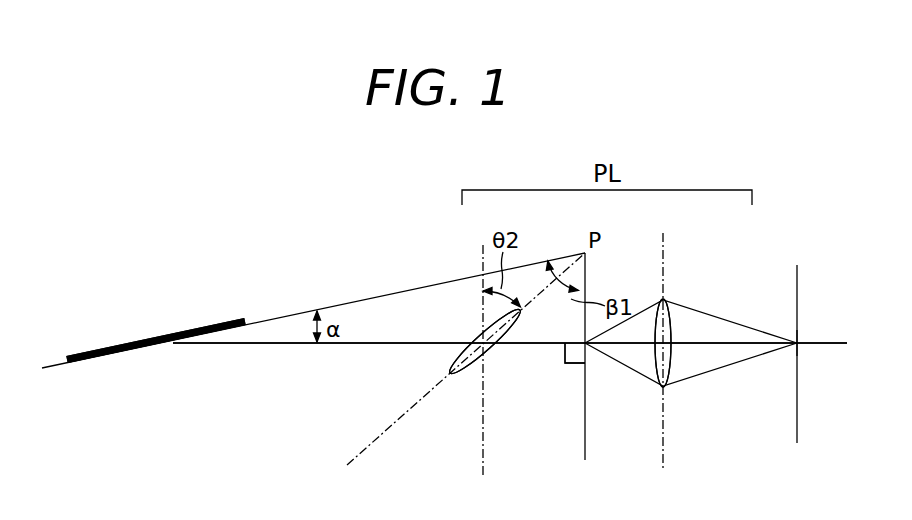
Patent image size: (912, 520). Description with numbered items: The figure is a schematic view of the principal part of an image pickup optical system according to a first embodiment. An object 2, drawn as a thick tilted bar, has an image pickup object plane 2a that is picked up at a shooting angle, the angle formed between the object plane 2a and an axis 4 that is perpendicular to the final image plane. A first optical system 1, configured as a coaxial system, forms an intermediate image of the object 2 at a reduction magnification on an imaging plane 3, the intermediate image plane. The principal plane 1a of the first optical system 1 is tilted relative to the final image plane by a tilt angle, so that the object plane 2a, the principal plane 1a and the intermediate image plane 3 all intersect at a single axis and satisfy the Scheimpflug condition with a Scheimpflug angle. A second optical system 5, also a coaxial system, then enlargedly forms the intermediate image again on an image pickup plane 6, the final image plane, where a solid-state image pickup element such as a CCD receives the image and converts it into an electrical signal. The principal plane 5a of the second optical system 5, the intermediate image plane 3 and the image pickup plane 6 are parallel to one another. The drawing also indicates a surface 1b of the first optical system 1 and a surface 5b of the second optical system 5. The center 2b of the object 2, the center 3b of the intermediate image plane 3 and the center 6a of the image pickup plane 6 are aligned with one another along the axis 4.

The first optical system 1 is at (455, 373).
The principal plane of the first optical system 1a is at (388, 425).
The lens surface of first lens 1b is at (493, 347).
The object 2 is at (140, 350).
The object plane 2a is at (402, 291).
The center of the object 2b is at (165, 347).
The imaging plane 3 is at (588, 397).
The center of the intermediate image plane 3b is at (584, 343).
The axis 4 is at (383, 345).
The second optical system 5 is at (664, 386).
The principal plane of the second optical system 5a is at (666, 262).
The lens surface of second lens 5b is at (669, 346).
The image pickup plane 6 is at (799, 383).
The center of the image pickup plane 6a is at (799, 340).